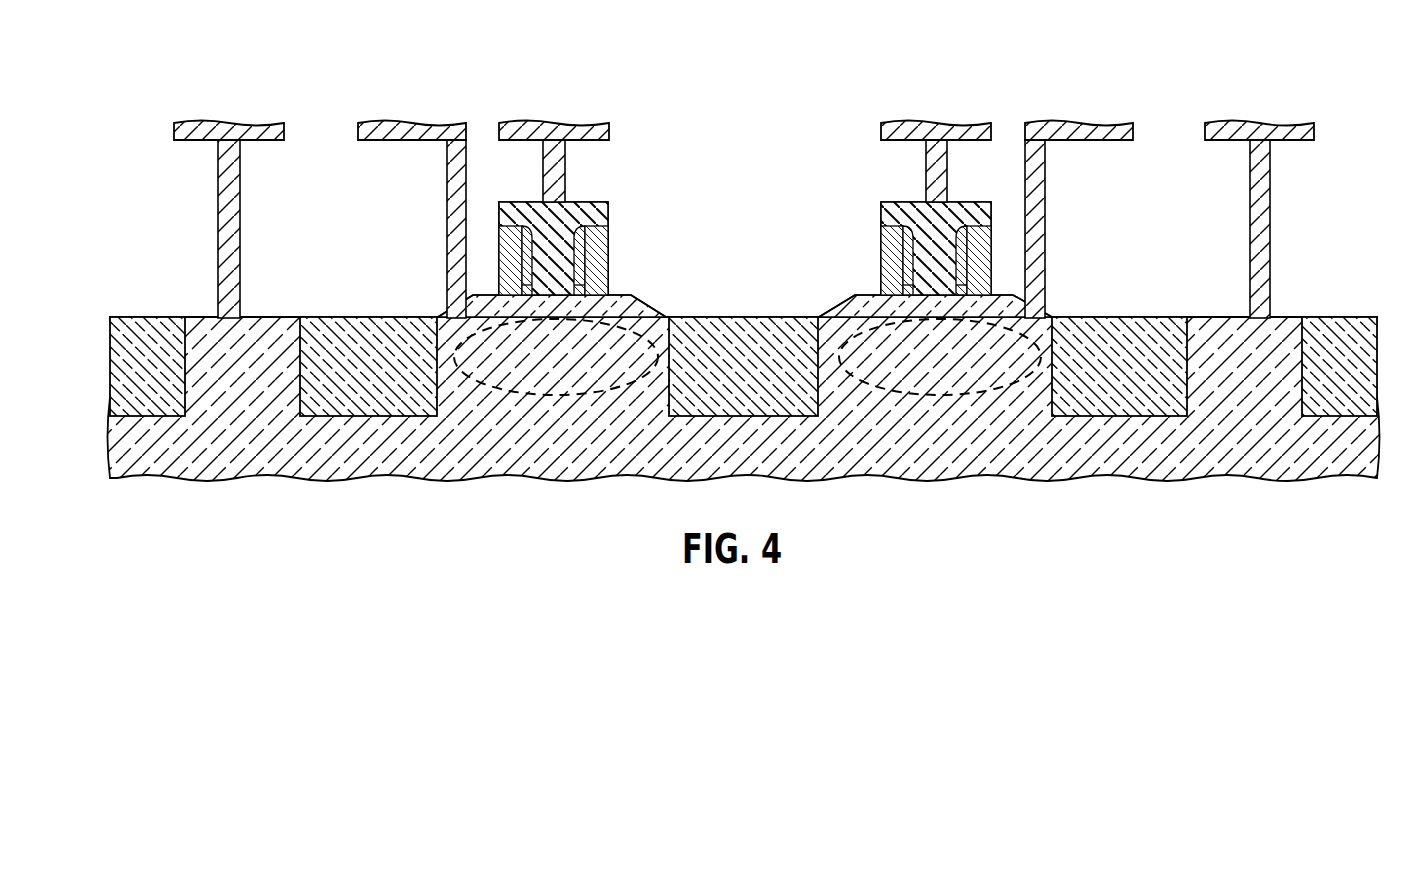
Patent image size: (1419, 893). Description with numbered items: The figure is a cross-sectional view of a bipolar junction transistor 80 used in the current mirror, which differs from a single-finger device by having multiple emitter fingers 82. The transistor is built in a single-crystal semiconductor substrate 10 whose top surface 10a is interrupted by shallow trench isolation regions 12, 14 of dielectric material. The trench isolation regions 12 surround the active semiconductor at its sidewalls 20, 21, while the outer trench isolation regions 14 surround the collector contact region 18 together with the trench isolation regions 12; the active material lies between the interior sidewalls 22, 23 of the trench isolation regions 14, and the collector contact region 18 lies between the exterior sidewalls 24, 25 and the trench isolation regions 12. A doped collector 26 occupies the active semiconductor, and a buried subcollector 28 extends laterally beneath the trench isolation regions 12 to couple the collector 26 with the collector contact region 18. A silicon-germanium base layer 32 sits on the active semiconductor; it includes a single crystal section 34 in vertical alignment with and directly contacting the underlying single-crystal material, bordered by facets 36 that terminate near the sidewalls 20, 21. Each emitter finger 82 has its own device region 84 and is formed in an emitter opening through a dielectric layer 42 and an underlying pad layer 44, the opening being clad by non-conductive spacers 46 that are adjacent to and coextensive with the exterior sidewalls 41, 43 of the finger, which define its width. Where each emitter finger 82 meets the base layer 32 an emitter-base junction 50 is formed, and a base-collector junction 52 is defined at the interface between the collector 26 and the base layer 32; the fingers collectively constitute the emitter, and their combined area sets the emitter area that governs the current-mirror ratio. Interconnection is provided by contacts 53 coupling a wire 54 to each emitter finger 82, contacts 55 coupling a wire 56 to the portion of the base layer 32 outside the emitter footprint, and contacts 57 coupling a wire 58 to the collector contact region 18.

The substrate 10 is at (113, 447).
The top surface of the substrate 10a is at (199, 316).
The trench isolation regions 12 is at (336, 316).
The trench isolation regions 14 is at (142, 316).
The collector contact region 18 is at (266, 316).
The sidewall of the active device region 20 is at (437, 397).
The sidewall of the active device region 21 is at (669, 396).
The interior sidewall of the trench isolation regions 14 22 is at (437, 392).
The interior sidewall of the trench isolation regions 14 23 is at (668, 386).
The exterior sidewall of the trench isolation regions 14 24 is at (300, 383).
The exterior sidewall of the trench isolation regions 14 25 is at (1187, 381).
The collector 26 is at (553, 360).
The subcollector 28 is at (384, 440).
The base layer 32 is at (618, 294).
The single crystal section 34 is at (474, 297).
The facets 36 is at (455, 307).
The exterior sidewall of the emitter 41 is at (507, 247).
The dielectric layer 42 is at (527, 228).
The exterior sidewall of the emitter 43 is at (593, 250).
The pad layer 44 is at (527, 285).
The non-conductive spacers 46 is at (580, 272).
The emitter-base junction 50 is at (560, 318).
The base-collector junction 52 is at (558, 318).
The contacts 53 is at (548, 153).
The wire 54 is at (551, 133).
The contacts 55 is at (452, 160).
The wire 56 is at (409, 133).
The contacts 57 is at (224, 160).
The wire 58 is at (225, 133).
The bipolar junction transistor 80 is at (714, 167).
The emitter fingers 82 is at (590, 212).
The device region 84 is at (631, 330).